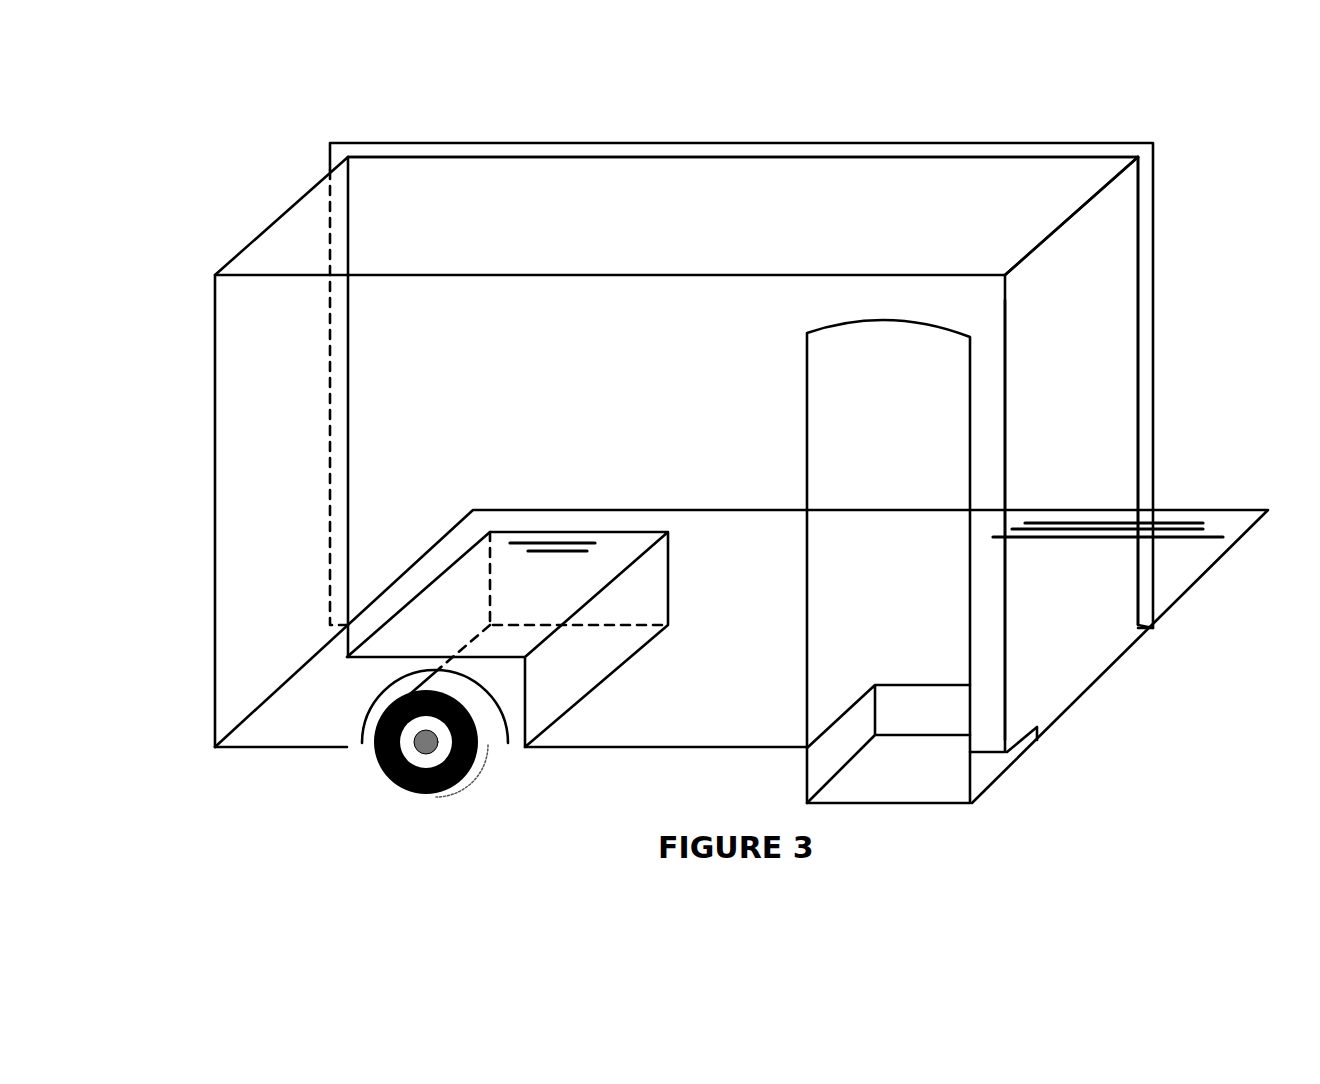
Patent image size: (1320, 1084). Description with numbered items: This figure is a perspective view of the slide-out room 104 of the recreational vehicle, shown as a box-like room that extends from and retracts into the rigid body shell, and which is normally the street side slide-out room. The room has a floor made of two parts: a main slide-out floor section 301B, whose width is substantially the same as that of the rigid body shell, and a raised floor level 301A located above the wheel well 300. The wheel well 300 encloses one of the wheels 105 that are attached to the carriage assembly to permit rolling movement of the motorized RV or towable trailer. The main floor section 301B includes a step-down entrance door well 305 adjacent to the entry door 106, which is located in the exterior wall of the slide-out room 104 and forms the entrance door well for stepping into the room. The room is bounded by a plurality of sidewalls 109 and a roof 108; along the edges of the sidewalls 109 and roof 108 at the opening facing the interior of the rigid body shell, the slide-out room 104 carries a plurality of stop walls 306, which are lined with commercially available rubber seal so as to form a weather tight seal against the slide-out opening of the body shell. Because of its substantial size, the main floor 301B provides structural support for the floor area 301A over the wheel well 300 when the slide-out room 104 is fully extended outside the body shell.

The slide-out room 104 is at (278, 207).
The roof 108 is at (932, 187).
The stop walls 306 is at (1145, 190).
The sidewalls 109 is at (1105, 333).
The entry door 106 is at (805, 410).
The step-down entrance door well 305 is at (985, 777).
The wheel well 300 is at (392, 637).
The wheels 105 is at (380, 767).
The floor level above the wheel well 301A is at (550, 542).
The main slide-out floor section 301B is at (1170, 528).